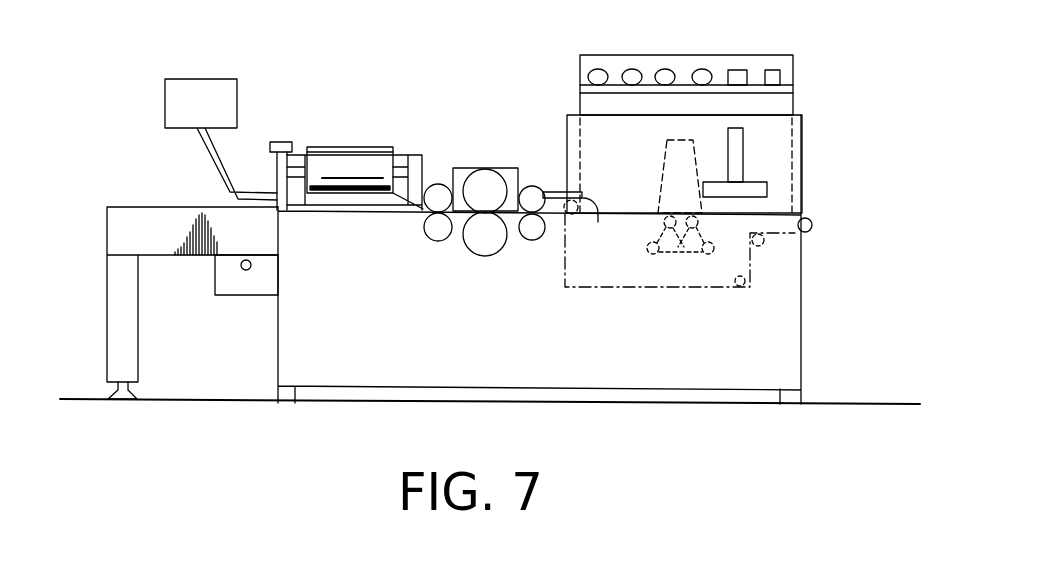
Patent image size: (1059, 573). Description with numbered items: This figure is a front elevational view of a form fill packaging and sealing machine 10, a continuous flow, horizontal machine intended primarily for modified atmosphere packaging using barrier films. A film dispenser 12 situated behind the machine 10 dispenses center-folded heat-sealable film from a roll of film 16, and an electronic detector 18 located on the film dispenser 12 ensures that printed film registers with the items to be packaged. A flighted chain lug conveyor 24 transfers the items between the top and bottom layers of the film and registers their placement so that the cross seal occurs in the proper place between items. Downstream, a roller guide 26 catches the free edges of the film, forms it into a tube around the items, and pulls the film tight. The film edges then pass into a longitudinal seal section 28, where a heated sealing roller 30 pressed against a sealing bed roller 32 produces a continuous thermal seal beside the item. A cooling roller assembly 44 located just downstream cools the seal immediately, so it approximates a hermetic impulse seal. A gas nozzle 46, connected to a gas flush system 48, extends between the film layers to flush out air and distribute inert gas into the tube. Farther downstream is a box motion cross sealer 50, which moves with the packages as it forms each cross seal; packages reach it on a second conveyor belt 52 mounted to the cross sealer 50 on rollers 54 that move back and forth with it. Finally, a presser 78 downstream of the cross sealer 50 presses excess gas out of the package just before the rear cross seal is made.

The form fill packaging and sealing machine 10 is at (408, 82).
The film dispenser 12 is at (403, 144).
The roll of film 16 is at (337, 153).
The electronic detector 18 is at (281, 140).
The flighted chain lug conveyor 24 is at (143, 202).
The roller guide 26 is at (432, 234).
The longitudinal seal section 28 is at (487, 160).
The heated sealing roller 30 is at (482, 196).
The sealing bed roller 32 is at (486, 236).
The cooling roller assembly 44 is at (532, 189).
The gas nozzle 46 is at (580, 226).
The gas flush system 48 is at (220, 113).
The cross sealer 50 is at (648, 168).
The second conveyor belt 52 is at (632, 288).
The rollers 54 is at (679, 253).
The presser 78 is at (762, 184).